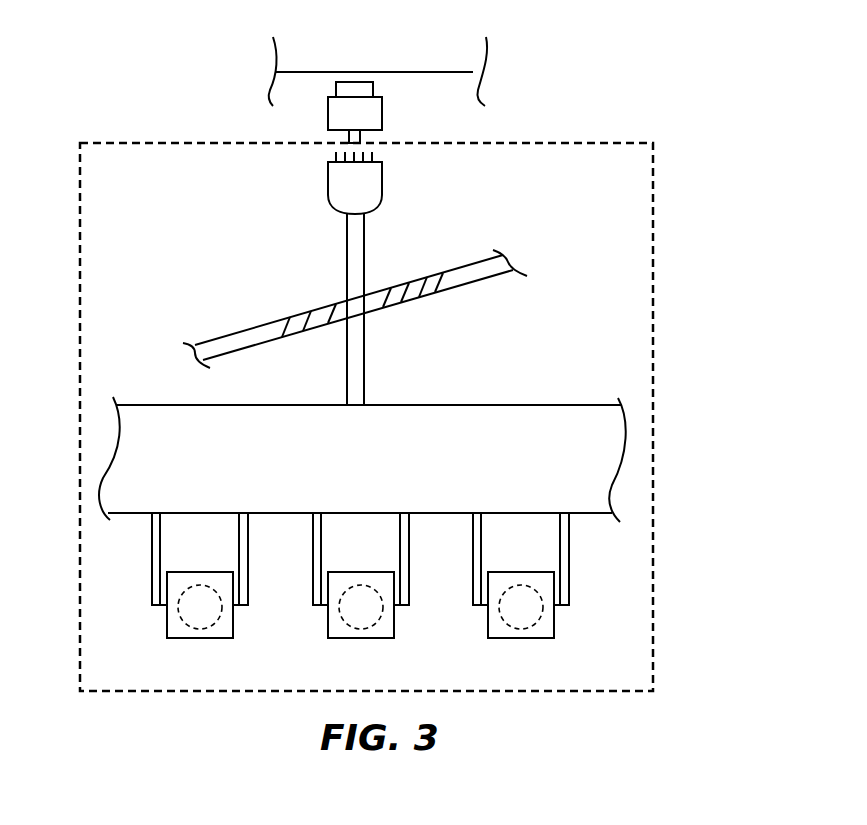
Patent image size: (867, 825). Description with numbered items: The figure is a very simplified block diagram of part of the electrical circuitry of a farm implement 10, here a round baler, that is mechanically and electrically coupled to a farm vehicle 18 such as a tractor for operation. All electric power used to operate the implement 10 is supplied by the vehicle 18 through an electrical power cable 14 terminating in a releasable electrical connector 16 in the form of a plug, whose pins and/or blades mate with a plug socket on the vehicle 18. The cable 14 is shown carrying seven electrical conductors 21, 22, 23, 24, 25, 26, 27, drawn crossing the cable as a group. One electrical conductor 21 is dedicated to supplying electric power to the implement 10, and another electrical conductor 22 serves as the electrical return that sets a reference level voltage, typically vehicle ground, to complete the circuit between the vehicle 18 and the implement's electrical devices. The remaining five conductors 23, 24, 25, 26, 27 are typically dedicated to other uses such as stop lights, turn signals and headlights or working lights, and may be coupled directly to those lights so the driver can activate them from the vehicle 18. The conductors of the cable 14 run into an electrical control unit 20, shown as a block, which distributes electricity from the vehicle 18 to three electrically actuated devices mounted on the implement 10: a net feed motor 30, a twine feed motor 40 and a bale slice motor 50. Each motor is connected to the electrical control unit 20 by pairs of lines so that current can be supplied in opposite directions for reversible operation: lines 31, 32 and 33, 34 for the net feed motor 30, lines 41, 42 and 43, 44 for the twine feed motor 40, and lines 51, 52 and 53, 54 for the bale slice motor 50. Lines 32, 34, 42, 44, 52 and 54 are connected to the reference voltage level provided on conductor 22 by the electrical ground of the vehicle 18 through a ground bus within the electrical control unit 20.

The farm implement 10 is at (660, 85).
The electrical power cable 14 is at (367, 237).
The releasable electrical connector 16 is at (383, 190).
The farm vehicle 18 is at (495, 55).
The electrical control unit 20 is at (434, 454).
The electrical conductor 21 is at (282, 332).
The electrical conductor 22 is at (298, 340).
The electrical conductor 23 is at (330, 306).
The electrical conductor 24 is at (366, 314).
The electrical conductor 25 is at (386, 290).
The electrical conductor 26 is at (396, 294).
The electrical conductor 27 is at (433, 277).
The net feed motor 30 is at (202, 654).
The line 31 is at (155, 586).
The line 32 is at (238, 524).
The line 33 is at (249, 588).
The line 34 is at (161, 522).
The twine feed motor 40 is at (363, 654).
The line 41 is at (316, 586).
The line 42 is at (399, 524).
The line 43 is at (410, 588).
The line 44 is at (322, 522).
The bale slice motor 50 is at (523, 654).
The line 51 is at (476, 586).
The line 52 is at (559, 524).
The line 53 is at (570, 588).
The line 54 is at (482, 522).